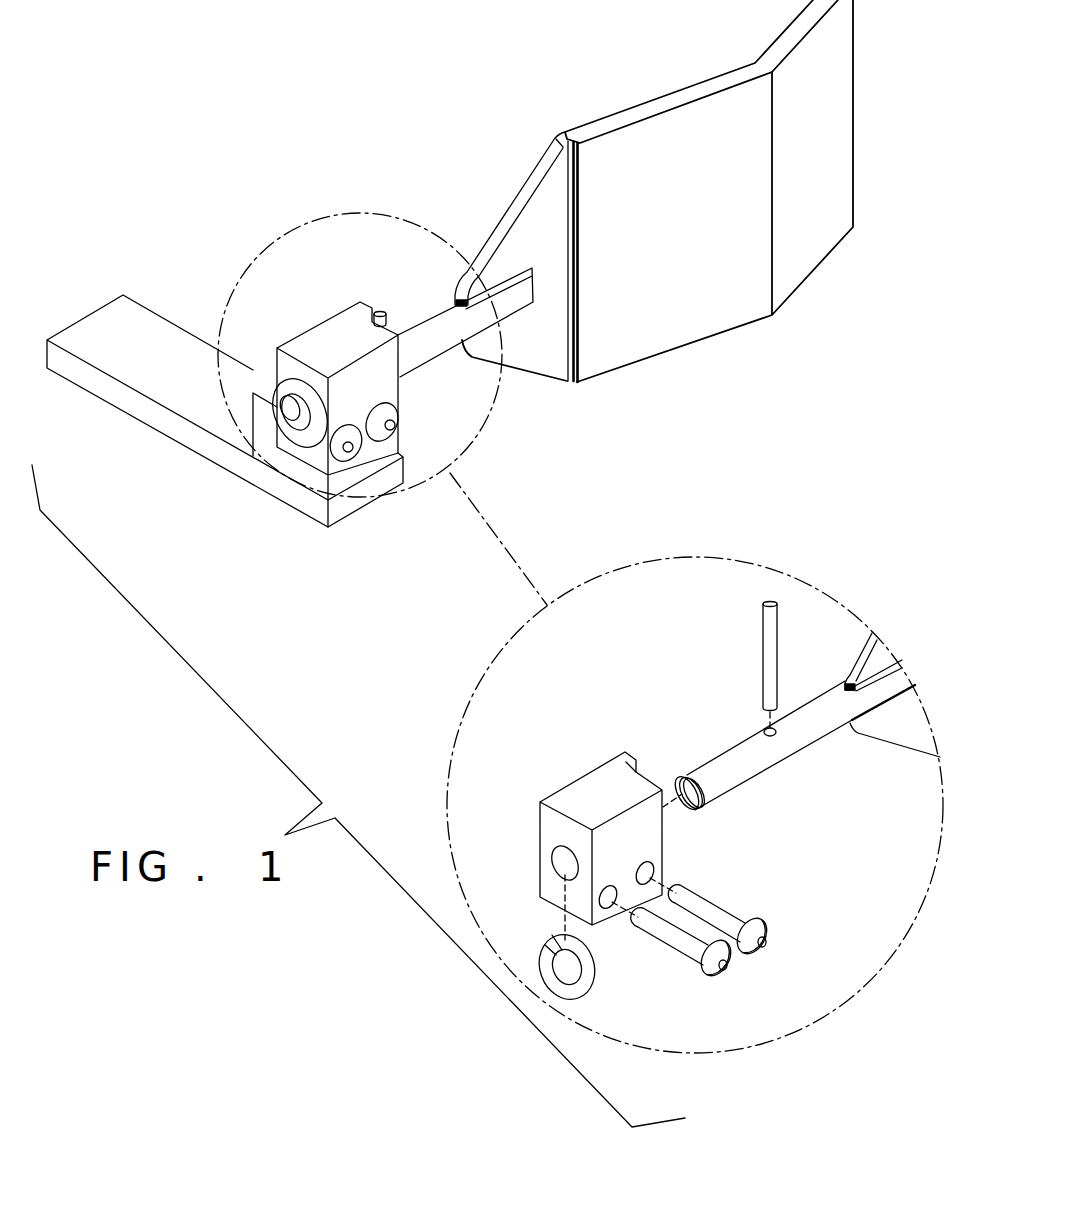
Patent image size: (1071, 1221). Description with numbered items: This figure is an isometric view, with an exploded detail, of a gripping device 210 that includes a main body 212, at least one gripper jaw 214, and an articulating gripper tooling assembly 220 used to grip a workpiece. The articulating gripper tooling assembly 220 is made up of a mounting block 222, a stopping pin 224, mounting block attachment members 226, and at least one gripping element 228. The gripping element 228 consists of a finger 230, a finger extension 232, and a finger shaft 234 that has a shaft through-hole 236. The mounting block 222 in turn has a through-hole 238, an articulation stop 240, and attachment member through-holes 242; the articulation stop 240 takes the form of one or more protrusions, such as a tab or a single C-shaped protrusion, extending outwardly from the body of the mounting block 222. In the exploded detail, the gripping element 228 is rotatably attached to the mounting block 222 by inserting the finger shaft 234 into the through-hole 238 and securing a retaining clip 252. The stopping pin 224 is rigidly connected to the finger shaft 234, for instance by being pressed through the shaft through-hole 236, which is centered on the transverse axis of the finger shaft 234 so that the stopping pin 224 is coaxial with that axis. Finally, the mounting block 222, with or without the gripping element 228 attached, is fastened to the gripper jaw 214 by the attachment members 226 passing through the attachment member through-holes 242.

The gripping device 210 is at (240, 225).
The main body 212 is at (160, 413).
The gripper jaw 214 is at (303, 470).
The articulating gripper tooling assembly 220 is at (431, 176).
The mounting block 222 is at (585, 790).
The stopping pin 224 is at (765, 630).
The mounting block attachment member 226 is at (725, 972).
The gripping element 228 is at (793, 77).
The finger 230 is at (815, 213).
The finger extension 232 is at (875, 733).
The finger shaft 234 is at (725, 757).
The shaft through-hole 236 is at (770, 740).
The through-hole 238 is at (553, 857).
The articulation stop 240 is at (666, 766).
The attachment member through-hole 242 is at (653, 868).
The retaining clip 252 is at (585, 995).